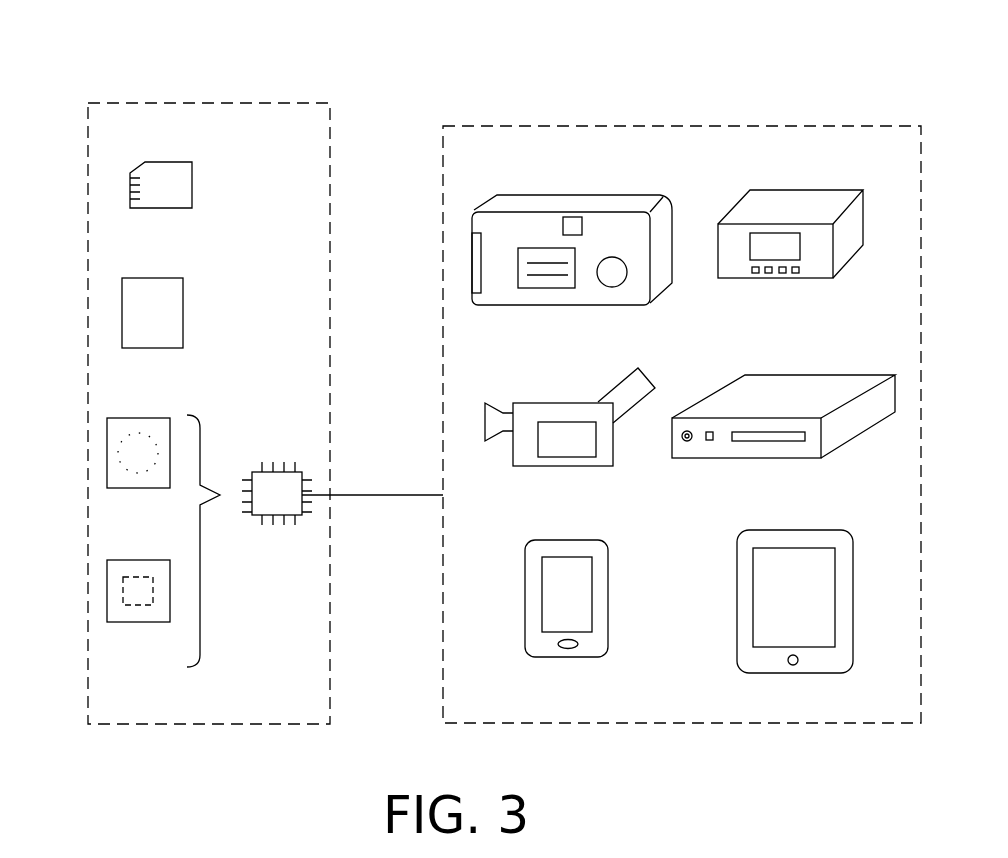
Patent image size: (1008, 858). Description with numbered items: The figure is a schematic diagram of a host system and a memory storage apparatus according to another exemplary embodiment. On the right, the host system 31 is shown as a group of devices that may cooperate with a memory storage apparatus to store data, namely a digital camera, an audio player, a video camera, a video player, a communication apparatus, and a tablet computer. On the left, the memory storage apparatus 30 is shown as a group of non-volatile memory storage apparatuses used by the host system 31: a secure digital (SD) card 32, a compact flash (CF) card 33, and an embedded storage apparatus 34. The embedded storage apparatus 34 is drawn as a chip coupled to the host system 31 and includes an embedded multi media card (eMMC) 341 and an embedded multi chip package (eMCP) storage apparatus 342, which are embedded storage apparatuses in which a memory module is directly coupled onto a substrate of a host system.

The memory storage apparatus 30 is at (199, 103).
The host system 31 is at (607, 126).
The secure digital (SD) card 32 is at (130, 192).
The compact flash (CF) card 33 is at (122, 317).
The embedded storage apparatus 34 is at (278, 462).
The embedded multi media card (eMMC) 341 is at (107, 455).
The embedded multi chip package (eMCP) storage apparatus 342 is at (107, 592).